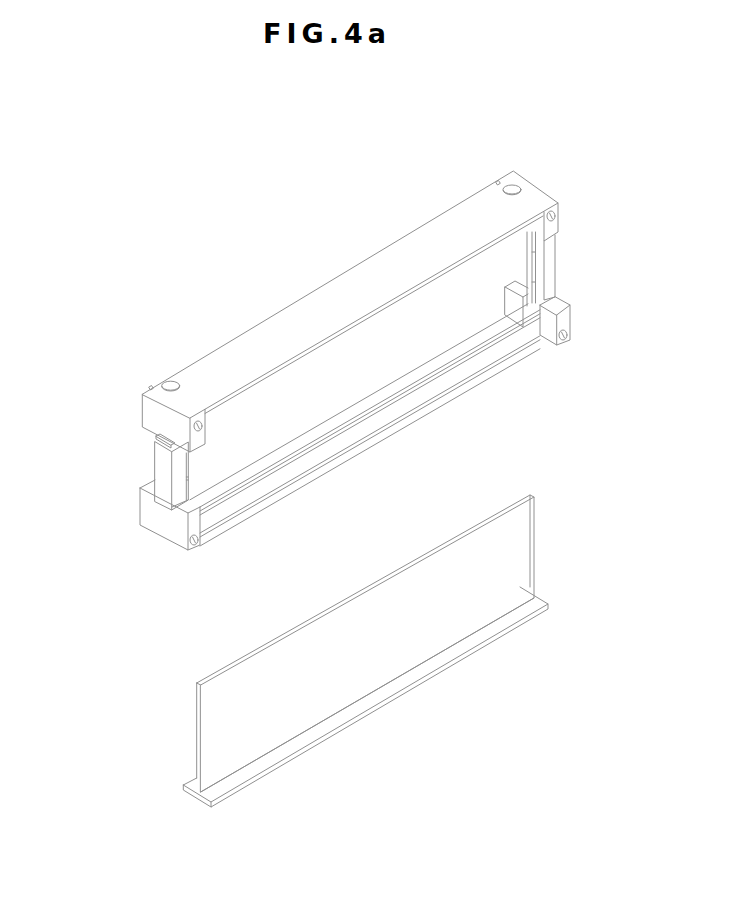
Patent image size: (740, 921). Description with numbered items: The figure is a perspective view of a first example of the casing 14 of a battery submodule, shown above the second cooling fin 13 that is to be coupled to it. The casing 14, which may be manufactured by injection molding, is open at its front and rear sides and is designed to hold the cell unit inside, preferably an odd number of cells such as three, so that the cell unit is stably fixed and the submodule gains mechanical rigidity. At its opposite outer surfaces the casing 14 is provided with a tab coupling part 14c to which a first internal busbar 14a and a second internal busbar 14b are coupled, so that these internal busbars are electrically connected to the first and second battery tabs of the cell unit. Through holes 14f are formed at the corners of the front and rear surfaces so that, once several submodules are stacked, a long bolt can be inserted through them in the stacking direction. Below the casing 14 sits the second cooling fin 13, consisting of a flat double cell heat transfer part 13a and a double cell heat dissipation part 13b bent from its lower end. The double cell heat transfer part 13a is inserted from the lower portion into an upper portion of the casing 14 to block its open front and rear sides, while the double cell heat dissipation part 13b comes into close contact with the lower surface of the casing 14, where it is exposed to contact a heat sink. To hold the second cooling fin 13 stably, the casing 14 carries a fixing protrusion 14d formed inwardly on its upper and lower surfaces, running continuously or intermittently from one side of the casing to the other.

The second cooling fin 13 is at (303, 659).
The double cell heat transfer part 13a is at (197, 738).
The double cell heat dissipation part 13b is at (198, 797).
The casing 14 is at (508, 178).
The first internal busbar 14a is at (165, 474).
The second internal busbar 14b is at (548, 265).
The tab coupling part 14c is at (158, 442).
The fixing protrusion 14d is at (330, 447).
The through hole 14f is at (187, 536).